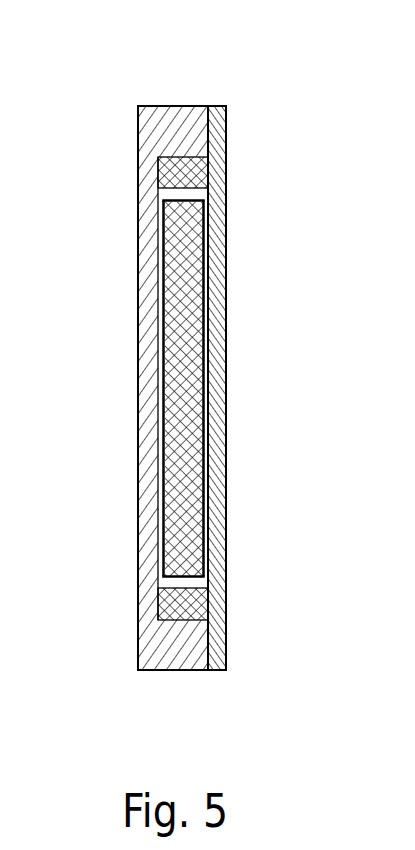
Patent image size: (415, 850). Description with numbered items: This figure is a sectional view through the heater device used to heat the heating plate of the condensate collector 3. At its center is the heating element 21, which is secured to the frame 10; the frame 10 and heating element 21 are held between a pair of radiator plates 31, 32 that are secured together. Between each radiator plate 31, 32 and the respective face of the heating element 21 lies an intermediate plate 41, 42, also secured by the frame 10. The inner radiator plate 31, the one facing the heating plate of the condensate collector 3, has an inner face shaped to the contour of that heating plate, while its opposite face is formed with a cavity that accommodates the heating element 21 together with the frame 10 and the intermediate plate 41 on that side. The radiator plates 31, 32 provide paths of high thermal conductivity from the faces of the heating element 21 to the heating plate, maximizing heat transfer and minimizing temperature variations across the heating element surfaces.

The frame 10 is at (177, 343).
The condensate collector 3 is at (174, 389).
The heating element 21 is at (203, 313).
The inner radiator plate 31 is at (138, 398).
The radiator plate 32 is at (222, 259).
The intermediate plate 41 is at (163, 323).
The intermediate plate 42 is at (205, 343).